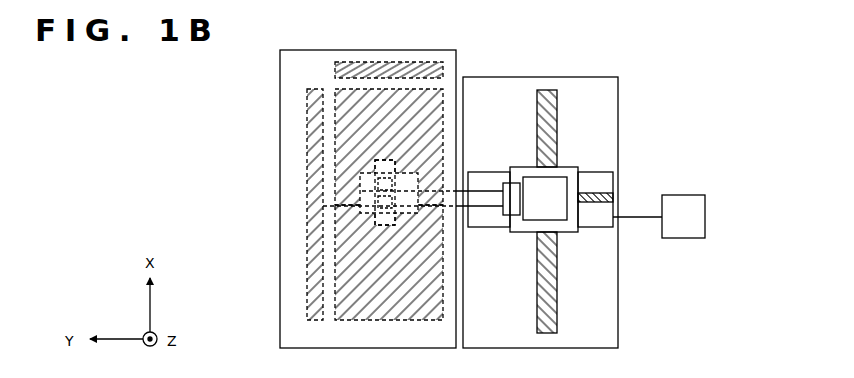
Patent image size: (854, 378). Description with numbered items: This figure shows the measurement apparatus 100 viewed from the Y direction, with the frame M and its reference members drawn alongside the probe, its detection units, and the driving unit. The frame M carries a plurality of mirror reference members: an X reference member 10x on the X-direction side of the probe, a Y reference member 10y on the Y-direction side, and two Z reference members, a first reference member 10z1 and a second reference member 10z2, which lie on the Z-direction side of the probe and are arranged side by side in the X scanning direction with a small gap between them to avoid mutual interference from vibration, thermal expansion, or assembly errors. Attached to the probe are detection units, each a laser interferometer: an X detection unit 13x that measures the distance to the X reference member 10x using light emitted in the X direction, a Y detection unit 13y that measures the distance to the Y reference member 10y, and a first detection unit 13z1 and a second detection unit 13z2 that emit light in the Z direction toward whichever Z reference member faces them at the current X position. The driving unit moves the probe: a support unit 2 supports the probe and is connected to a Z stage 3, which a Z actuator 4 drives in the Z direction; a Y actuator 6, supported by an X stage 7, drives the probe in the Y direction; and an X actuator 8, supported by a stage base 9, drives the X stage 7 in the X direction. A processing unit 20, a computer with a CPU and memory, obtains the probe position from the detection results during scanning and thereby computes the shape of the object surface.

The measurement apparatus 100 is at (680, 49).
The frame M is at (261, 51).
The X reference member 10x is at (408, 62).
The Y reference member 10y is at (307, 252).
The first reference member 10z1 is at (350, 89).
The second reference member 10z2 is at (335, 297).
The X detection unit 13x is at (382, 164).
The Y detection unit 13y is at (360, 207).
The first detection unit 13z1 is at (364, 191).
The second detection unit 13z2 is at (323, 205).
The support unit 2 is at (483, 209).
The Z stage 3 is at (510, 183).
The Z actuator 4 is at (520, 218).
The Y actuator 6 is at (613, 197).
The X stage 7 is at (605, 172).
The X actuator 8 is at (557, 105).
The stage base 9 is at (618, 90).
The processing unit 20 is at (688, 195).